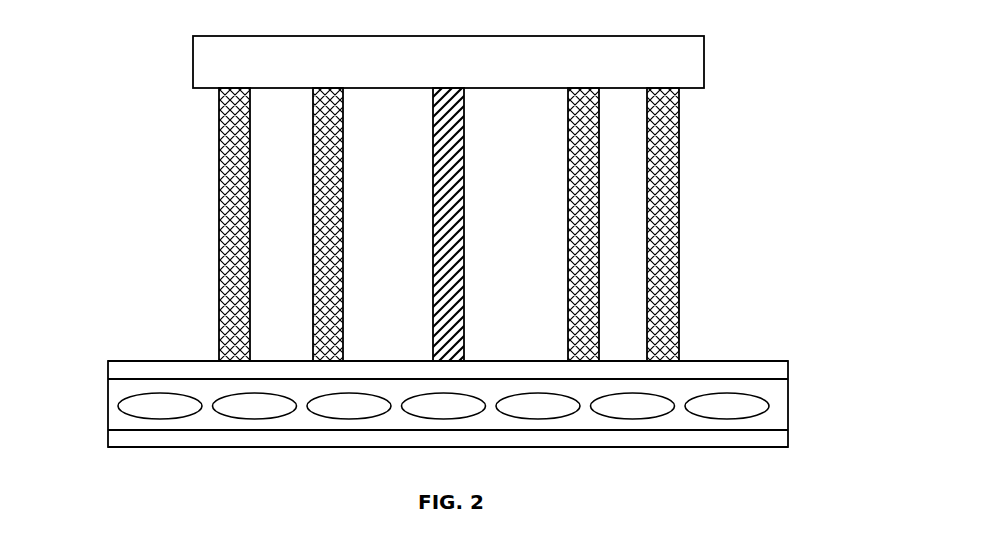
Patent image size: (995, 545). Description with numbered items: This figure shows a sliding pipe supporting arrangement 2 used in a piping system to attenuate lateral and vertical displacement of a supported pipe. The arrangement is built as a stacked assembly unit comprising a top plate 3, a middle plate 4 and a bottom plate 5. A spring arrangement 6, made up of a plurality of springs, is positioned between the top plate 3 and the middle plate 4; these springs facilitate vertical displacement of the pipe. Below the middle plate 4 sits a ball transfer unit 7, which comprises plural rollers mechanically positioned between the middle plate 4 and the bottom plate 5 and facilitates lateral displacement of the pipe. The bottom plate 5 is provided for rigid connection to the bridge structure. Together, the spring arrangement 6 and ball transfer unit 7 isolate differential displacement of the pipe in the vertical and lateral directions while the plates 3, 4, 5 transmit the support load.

The sliding pipe supporting arrangement 2 is at (465, 297).
The top plate 3 is at (705, 62).
The middle plate 4 is at (789, 370).
The bottom plate 5 is at (107, 438).
The spring arrangement 6 is at (680, 225).
The ball transfer unit 7 is at (748, 406).